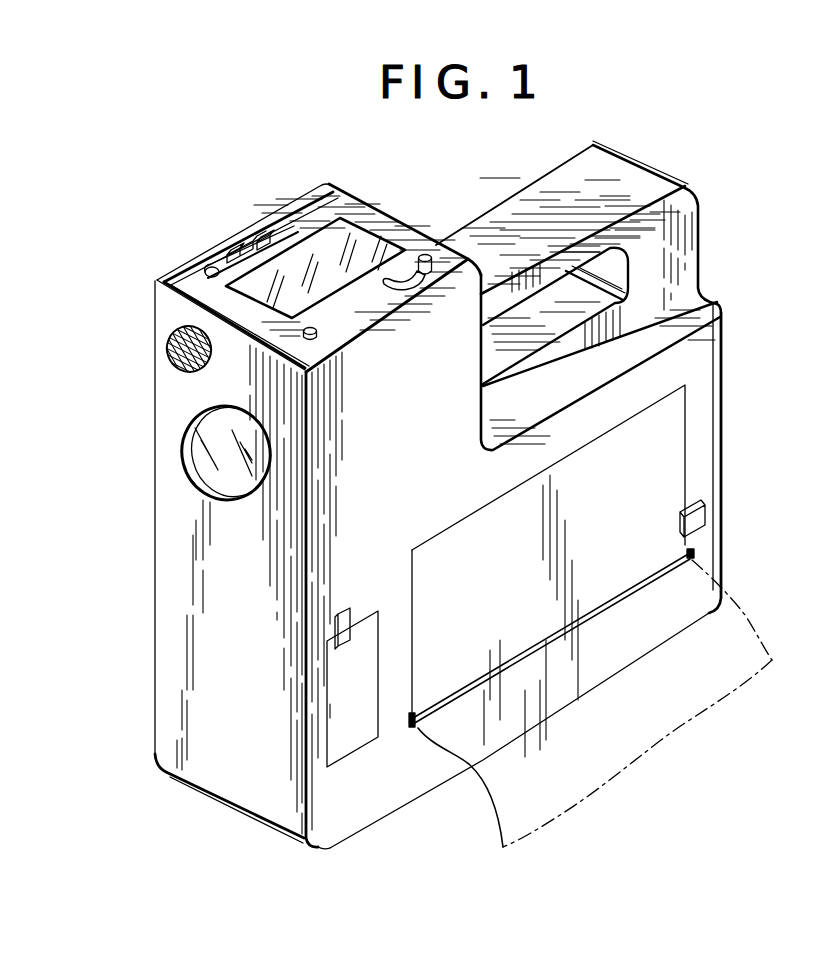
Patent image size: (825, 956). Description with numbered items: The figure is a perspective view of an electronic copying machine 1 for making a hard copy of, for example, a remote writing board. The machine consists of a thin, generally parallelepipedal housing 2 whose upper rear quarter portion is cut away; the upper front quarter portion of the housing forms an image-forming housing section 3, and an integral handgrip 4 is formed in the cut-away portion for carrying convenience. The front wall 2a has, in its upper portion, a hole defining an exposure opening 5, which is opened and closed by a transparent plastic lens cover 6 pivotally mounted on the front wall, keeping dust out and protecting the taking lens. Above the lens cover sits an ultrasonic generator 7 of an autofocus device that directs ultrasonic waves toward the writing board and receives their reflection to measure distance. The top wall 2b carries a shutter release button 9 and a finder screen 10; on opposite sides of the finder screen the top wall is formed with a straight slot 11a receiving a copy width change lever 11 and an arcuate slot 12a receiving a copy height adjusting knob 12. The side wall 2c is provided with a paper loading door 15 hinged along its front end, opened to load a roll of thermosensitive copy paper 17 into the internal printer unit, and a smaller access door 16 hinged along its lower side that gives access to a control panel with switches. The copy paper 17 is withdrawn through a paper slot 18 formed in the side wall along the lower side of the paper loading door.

The electronic copying machine 1 is at (128, 563).
The housing 2 is at (145, 683).
The front wall 2a is at (168, 628).
The top wall 2b is at (337, 188).
The side wall 2c is at (705, 375).
The image-forming housing section 3 is at (294, 196).
The handgrip 4 is at (627, 178).
The exposure opening 5 is at (200, 484).
The lens cover 6 is at (195, 442).
The ultrasonic generator 7 is at (170, 350).
The shutter release button 9 is at (322, 335).
The finder screen 10 is at (342, 281).
The copy width change lever 11 is at (238, 250).
The straight slot 11a is at (213, 268).
The copy height adjusting knob 12 is at (424, 253).
The arcuate slot 12a is at (422, 290).
The paper loading door 15 is at (672, 465).
The access door 16 is at (360, 742).
The thermosensitive copy paper 17 is at (667, 730).
The paper slot 18 is at (437, 740).